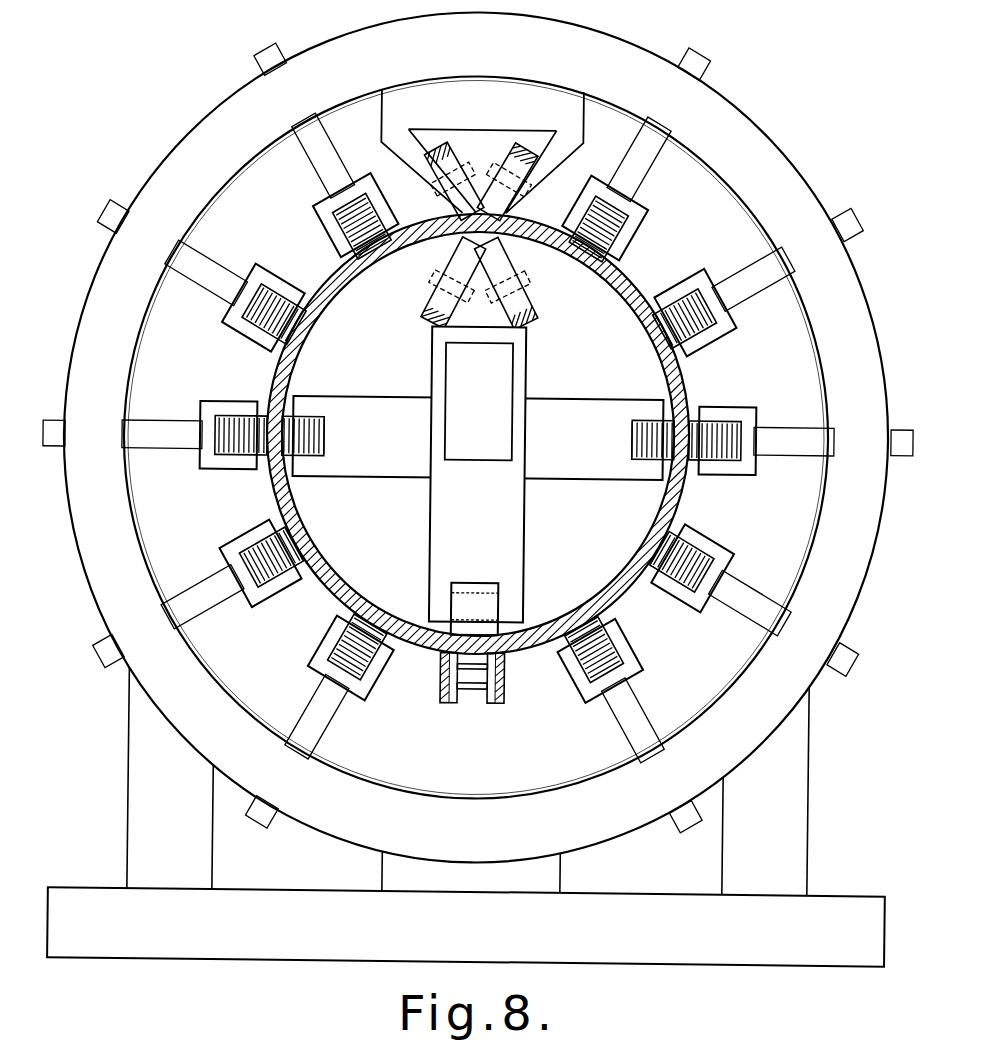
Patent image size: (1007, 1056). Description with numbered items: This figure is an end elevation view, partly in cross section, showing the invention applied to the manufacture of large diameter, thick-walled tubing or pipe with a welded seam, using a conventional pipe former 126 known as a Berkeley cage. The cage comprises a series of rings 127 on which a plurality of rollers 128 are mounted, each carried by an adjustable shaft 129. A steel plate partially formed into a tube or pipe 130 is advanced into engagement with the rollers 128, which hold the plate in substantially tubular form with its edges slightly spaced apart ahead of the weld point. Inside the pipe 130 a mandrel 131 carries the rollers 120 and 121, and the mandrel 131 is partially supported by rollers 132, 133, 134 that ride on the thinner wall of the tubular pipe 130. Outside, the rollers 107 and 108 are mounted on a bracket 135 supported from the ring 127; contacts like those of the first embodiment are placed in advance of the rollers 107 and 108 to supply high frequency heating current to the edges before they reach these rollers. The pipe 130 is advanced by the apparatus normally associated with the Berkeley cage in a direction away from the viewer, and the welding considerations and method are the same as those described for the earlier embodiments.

The roller 107 is at (441, 152).
The roller 108 is at (518, 160).
The roller 120 is at (426, 291).
The roller 121 is at (529, 289).
The pipe former 126 is at (790, 130).
The ring 127 is at (185, 137).
The roller 128 is at (352, 231).
The adjustable shaft 129 is at (322, 171).
The tube or pipe 130 is at (338, 563).
The mandrel 131 is at (527, 376).
The roller 132 is at (313, 423).
The roller 133 is at (492, 606).
The roller 134 is at (649, 461).
The bracket 135 is at (566, 118).